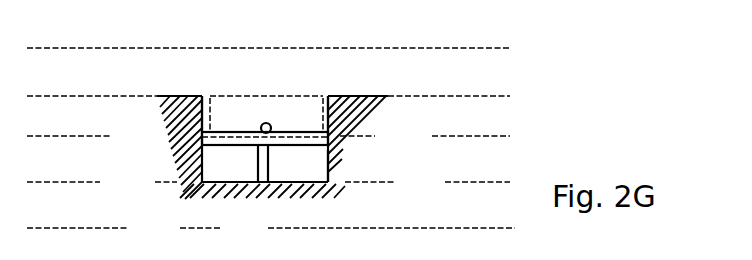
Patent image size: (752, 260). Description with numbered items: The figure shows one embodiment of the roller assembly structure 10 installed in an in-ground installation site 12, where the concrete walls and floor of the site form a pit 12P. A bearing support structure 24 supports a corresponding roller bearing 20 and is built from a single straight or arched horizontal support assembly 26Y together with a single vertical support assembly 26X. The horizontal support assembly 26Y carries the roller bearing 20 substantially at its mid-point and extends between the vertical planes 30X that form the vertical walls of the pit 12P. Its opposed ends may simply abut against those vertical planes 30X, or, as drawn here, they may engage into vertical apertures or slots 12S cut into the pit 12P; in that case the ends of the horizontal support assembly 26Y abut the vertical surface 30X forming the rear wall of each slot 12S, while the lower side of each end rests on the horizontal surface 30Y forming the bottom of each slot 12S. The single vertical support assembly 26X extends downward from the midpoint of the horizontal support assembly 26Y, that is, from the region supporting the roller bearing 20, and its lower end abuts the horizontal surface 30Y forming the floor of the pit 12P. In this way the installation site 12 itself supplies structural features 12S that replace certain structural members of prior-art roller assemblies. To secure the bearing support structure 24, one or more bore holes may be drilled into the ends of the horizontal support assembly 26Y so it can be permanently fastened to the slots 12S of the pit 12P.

The roller assembly structure 10 is at (388, 28).
The installation site 12 is at (255, 47).
The pit 12P is at (305, 78).
The installation site structure 12S is at (331, 175).
The roller bearing 20 is at (270, 123).
The bearing support structure 24 is at (248, 104).
The vertical support assembly 26X is at (270, 165).
The horizontal support assembly 26Y is at (224, 162).
The vertical plane 30X is at (200, 140).
The horizontal plane 30Y is at (254, 184).